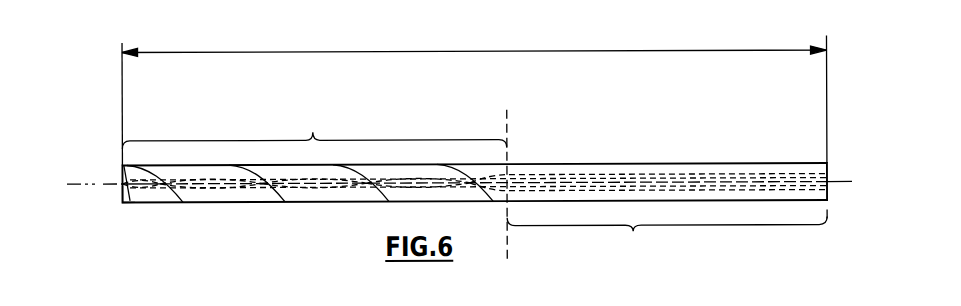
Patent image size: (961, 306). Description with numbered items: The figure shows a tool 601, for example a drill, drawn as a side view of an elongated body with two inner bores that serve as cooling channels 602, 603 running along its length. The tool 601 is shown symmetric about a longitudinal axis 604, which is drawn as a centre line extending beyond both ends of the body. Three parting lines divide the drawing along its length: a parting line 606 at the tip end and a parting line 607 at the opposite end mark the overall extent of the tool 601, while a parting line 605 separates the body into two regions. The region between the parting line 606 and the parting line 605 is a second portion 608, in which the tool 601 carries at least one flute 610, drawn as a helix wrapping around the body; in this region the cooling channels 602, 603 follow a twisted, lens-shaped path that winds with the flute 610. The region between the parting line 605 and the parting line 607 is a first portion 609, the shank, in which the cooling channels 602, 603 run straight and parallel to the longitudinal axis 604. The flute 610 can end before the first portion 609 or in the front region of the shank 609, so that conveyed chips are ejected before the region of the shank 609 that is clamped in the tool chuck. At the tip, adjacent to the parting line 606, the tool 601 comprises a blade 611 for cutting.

The tool 601 is at (683, 136).
The cooling channel 602 is at (753, 175).
The cooling channel 603 is at (704, 193).
The longitudinal axis 604 is at (852, 184).
The parting line 605 is at (506, 170).
The parting line 606 is at (465, 89).
The parting line 607 is at (825, 115).
The second portion 608 is at (314, 126).
The first portion 609 is at (667, 240).
The flute 610 is at (156, 196).
The blade 611 is at (122, 197).